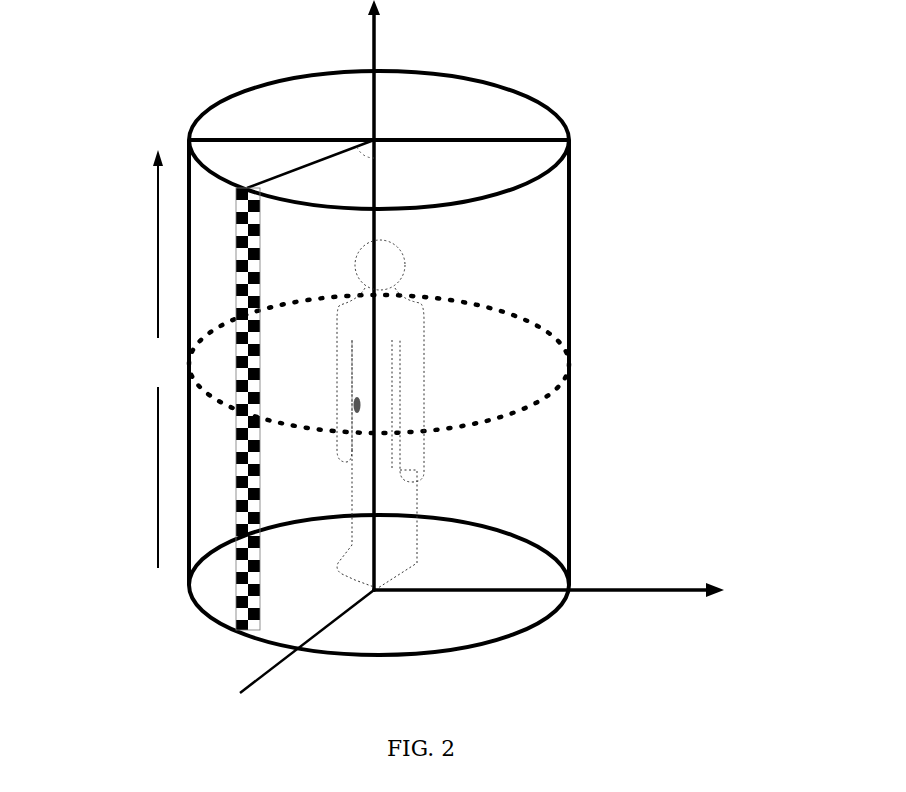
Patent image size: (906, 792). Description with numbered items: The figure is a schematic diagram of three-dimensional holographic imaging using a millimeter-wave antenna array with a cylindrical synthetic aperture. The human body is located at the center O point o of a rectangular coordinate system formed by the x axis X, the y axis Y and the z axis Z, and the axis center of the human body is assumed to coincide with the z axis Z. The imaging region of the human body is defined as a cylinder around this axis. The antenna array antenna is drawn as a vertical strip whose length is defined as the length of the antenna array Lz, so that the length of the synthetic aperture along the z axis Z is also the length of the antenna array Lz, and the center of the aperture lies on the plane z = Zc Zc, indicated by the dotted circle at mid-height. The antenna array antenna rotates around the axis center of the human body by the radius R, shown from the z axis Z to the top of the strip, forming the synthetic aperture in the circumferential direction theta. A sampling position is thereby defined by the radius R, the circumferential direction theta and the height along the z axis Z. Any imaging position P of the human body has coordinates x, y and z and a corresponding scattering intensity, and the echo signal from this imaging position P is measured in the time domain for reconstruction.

The radius R is at (310, 164).
The length of the antenna array Lz is at (159, 359).
The plane z = Zc is at (417, 364).
The imaging position P is at (360, 402).
The antenna array antenna is at (228, 529).
The circumferential θ direction theta is at (390, 157).
The x axis X is at (549, 604).
The y axis Y is at (307, 648).
The z axis Z is at (394, 295).
The center O point o is at (382, 606).